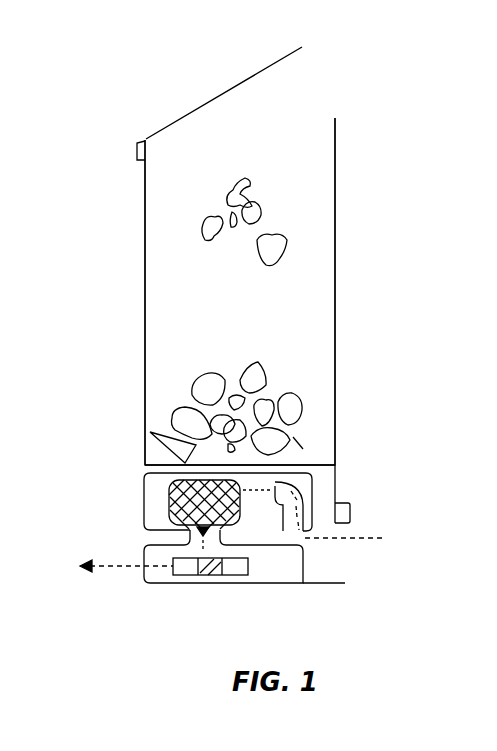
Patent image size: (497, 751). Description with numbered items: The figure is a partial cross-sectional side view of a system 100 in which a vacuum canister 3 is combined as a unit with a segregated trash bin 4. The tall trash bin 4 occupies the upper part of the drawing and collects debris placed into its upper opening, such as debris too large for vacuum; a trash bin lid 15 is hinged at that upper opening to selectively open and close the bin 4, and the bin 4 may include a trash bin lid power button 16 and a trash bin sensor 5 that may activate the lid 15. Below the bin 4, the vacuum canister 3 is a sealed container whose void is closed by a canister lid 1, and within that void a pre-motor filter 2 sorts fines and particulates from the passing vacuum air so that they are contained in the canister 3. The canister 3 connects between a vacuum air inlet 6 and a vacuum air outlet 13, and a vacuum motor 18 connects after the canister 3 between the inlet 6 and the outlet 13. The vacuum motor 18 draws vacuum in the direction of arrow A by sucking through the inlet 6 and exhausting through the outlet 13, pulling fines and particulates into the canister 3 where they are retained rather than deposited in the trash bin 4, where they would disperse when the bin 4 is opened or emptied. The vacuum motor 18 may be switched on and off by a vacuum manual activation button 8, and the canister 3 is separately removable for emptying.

The system 100 is at (122, 45).
The canister lid 1 is at (144, 464).
The pre-motor filter 2 is at (188, 483).
The vacuum canister 3 is at (145, 497).
The segregated trash bin 4 is at (144, 272).
The trash bin sensor 5 is at (338, 121).
The vacuum air inlet 6 is at (341, 586).
The vacuum manual activation button 8 is at (350, 512).
The vacuum air outlet 13 is at (143, 553).
The trash bin lid 15 is at (200, 104).
The trash bin lid power button 16 is at (136, 149).
The vacuum motor 18 is at (216, 583).
The arrow A is at (364, 537).